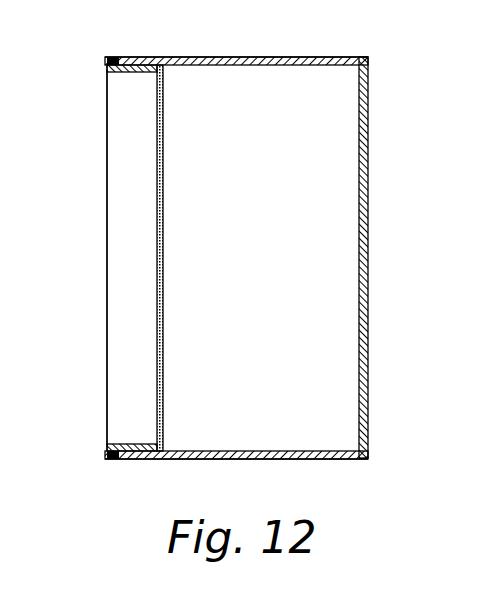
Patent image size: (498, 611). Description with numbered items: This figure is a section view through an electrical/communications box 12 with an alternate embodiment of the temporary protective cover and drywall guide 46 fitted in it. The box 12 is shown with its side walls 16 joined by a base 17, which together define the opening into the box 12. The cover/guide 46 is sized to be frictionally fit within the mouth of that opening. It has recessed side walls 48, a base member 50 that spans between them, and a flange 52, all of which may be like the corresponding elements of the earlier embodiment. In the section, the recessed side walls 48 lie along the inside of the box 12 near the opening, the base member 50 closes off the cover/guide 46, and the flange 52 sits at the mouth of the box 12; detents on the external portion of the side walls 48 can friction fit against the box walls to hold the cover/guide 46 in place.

The electrical/communications box 12 is at (292, 58).
The side wall 16 is at (164, 60).
The base 17 is at (368, 266).
The cover/guide 46 is at (84, 234).
The recessed side wall 48 is at (131, 73).
The base member 50 is at (163, 241).
The flange 52 is at (105, 62).